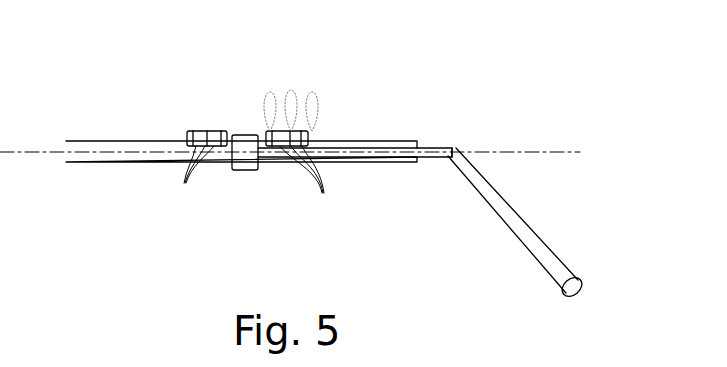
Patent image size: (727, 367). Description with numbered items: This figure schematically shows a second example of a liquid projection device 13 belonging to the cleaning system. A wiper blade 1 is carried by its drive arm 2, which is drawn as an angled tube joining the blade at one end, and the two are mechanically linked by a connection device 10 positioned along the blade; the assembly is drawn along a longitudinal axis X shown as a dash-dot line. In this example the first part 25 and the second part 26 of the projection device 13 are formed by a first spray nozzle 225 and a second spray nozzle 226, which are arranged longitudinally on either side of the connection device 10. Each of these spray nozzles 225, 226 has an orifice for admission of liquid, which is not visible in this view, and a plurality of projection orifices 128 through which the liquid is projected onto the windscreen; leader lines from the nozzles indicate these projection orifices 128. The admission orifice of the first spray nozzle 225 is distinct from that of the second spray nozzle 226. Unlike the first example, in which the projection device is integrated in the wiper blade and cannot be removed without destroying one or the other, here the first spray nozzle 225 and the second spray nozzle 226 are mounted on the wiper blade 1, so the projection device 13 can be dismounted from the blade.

The wiper blade 1 is at (109, 171).
The drive arm 2 is at (535, 237).
The connection device 10 is at (240, 165).
The projection device 13 is at (250, 84).
The first part 25 is at (146, 114).
The first spray nozzle 225 is at (187, 133).
The second part 26 is at (349, 105).
The second spray nozzle 226 is at (308, 133).
The projection orifices 128 is at (255, 181).
The longitudinal axis X is at (535, 152).